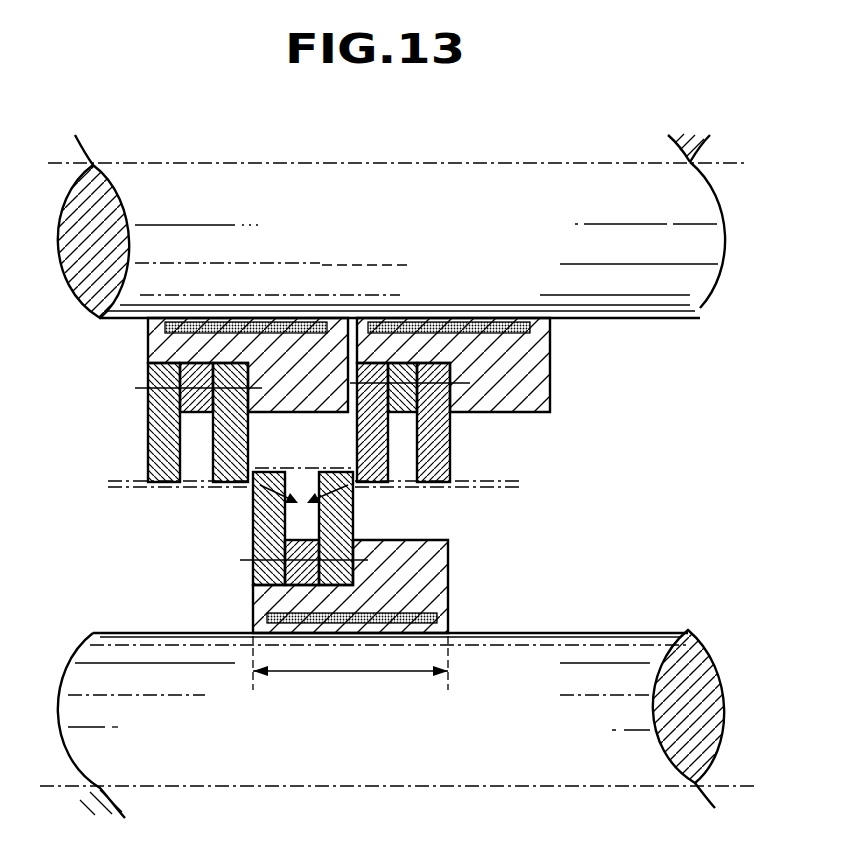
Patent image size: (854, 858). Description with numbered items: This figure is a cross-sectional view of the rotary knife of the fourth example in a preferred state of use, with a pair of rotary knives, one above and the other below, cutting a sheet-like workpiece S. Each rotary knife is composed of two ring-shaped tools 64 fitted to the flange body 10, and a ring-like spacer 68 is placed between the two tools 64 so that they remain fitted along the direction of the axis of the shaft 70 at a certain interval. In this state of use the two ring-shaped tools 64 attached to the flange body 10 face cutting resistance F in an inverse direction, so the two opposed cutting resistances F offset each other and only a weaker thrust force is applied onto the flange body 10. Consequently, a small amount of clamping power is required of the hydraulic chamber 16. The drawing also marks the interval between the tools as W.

The flange body 10 is at (160, 343).
The hydraulic chamber 16 is at (266, 322).
The ring-shaped tool 64 is at (228, 443).
The ring-like spacer 68 is at (185, 404).
The shaft 70 is at (695, 285).
The sheet-like workpiece S is at (478, 488).
The width W is at (350, 671).
The cutting resistance F is at (303, 505).